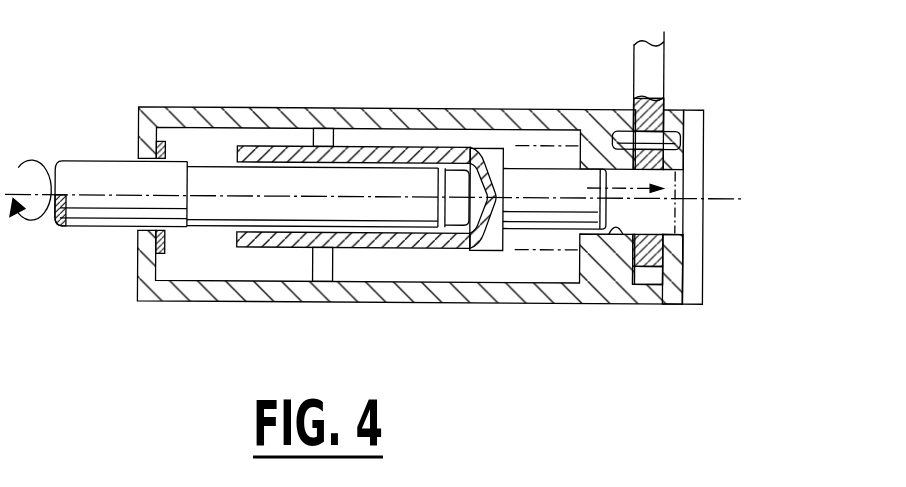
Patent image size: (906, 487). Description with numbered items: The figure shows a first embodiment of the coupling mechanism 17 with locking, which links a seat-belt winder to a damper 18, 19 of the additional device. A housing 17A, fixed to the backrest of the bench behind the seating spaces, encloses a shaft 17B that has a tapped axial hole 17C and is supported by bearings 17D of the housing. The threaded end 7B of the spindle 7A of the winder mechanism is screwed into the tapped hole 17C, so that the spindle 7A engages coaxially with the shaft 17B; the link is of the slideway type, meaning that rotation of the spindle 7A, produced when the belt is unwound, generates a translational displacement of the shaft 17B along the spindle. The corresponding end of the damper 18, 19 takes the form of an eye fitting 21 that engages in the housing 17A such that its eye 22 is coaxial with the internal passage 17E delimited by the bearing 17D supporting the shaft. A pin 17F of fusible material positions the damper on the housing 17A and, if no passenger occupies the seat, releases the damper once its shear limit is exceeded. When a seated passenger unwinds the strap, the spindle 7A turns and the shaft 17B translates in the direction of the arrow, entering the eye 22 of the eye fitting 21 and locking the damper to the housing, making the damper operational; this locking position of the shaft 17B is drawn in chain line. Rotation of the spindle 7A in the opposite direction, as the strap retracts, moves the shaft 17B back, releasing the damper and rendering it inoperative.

The spindle 7A is at (92, 170).
The threaded end 7B is at (393, 218).
The coupling mechanism 17 is at (494, 316).
The housing 17A is at (312, 128).
The shaft 17B is at (453, 155).
The tapped axial hole 17C is at (256, 163).
The bearings 17D is at (592, 160).
The internal passage 17E is at (617, 234).
The fusible pin 17F is at (683, 133).
The damper 18 is at (701, 142).
The damper 19 is at (662, 48).
The eye fitting 21 is at (662, 107).
The eye 22 is at (670, 263).